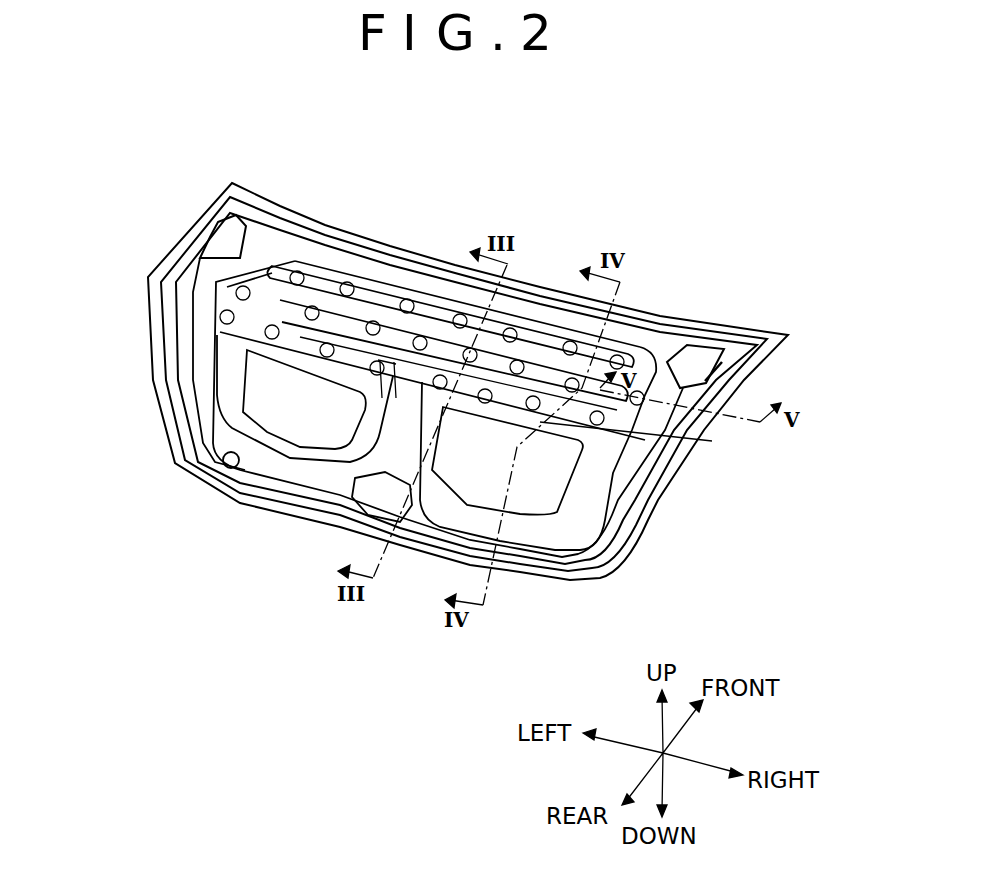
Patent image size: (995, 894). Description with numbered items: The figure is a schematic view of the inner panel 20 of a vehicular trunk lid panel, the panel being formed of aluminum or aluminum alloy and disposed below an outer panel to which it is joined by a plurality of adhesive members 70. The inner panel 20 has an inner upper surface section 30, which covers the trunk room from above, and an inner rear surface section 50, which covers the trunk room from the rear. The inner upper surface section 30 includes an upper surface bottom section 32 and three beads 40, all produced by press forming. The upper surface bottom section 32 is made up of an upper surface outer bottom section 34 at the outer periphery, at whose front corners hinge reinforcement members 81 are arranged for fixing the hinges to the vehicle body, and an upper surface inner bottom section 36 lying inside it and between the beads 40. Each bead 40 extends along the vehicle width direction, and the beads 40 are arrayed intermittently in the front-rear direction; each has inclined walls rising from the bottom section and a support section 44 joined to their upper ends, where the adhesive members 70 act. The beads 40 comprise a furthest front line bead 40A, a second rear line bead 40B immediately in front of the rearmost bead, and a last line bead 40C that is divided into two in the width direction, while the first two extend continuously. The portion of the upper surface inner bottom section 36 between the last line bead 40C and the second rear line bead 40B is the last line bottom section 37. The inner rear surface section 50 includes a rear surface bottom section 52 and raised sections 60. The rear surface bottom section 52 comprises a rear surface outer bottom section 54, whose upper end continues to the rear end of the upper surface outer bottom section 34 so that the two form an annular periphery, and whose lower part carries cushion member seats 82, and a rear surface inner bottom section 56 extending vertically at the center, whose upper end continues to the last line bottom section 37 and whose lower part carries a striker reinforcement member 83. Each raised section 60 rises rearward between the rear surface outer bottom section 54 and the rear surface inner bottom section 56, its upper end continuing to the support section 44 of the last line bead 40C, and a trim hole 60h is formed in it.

The inner panel 20 is at (648, 175).
The inner upper surface section 30 is at (737, 327).
The upper surface bottom section 32 is at (472, 282).
The upper surface outer bottom section 34 is at (472, 282).
The upper surface inner bottom section 36 is at (450, 276).
The last line bottom section 37 is at (256, 257).
The bead 40 is at (472, 274).
The furthest front line bead 40A is at (410, 345).
The second rear line bead 40B is at (573, 385).
The last line bead 40C is at (345, 355).
The support section 44 is at (563, 332).
The inner rear surface section 50 is at (653, 523).
The rear surface bottom section 52 is at (452, 481).
The rear surface outer bottom section 54 is at (607, 573).
The rear surface inner bottom section 56 is at (388, 522).
The raised section 60 is at (223, 365).
The trim hole 60h is at (265, 392).
The adhesive member 70 is at (523, 365).
The hinge reinforcement member 81 is at (228, 247).
The cushion member seat 82 is at (223, 462).
The striker reinforcement member 83 is at (340, 500).